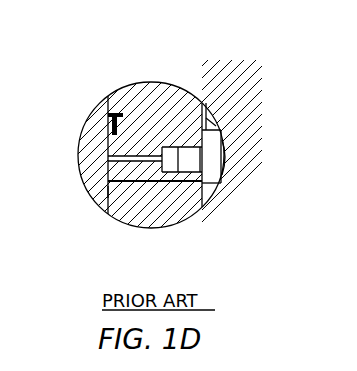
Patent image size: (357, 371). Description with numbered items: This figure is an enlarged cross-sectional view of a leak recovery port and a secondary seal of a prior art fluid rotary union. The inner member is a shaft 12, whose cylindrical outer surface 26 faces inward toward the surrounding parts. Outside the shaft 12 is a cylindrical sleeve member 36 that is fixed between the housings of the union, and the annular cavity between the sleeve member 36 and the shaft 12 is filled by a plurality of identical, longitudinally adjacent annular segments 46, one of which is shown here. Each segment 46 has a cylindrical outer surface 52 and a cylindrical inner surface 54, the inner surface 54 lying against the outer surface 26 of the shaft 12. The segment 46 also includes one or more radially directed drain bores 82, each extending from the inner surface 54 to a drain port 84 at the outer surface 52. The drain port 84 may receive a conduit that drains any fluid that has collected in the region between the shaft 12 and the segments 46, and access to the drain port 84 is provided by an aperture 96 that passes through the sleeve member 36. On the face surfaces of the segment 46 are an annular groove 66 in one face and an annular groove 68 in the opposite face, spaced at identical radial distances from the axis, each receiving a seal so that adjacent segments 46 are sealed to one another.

The shaft 12 is at (112, 100).
The cylindrical outer surface 26 is at (137, 87).
The sleeve member 36 is at (221, 131).
The annular segment 46 is at (193, 103).
The cylindrical outer surface 52 is at (216, 105).
The cylindrical inner surface 54 is at (97, 137).
The annular groove 66 is at (128, 189).
The annular groove 68 is at (100, 191).
The drain bore 82 is at (217, 156).
The drain port 84 is at (240, 146).
The aperture 96 is at (238, 182).